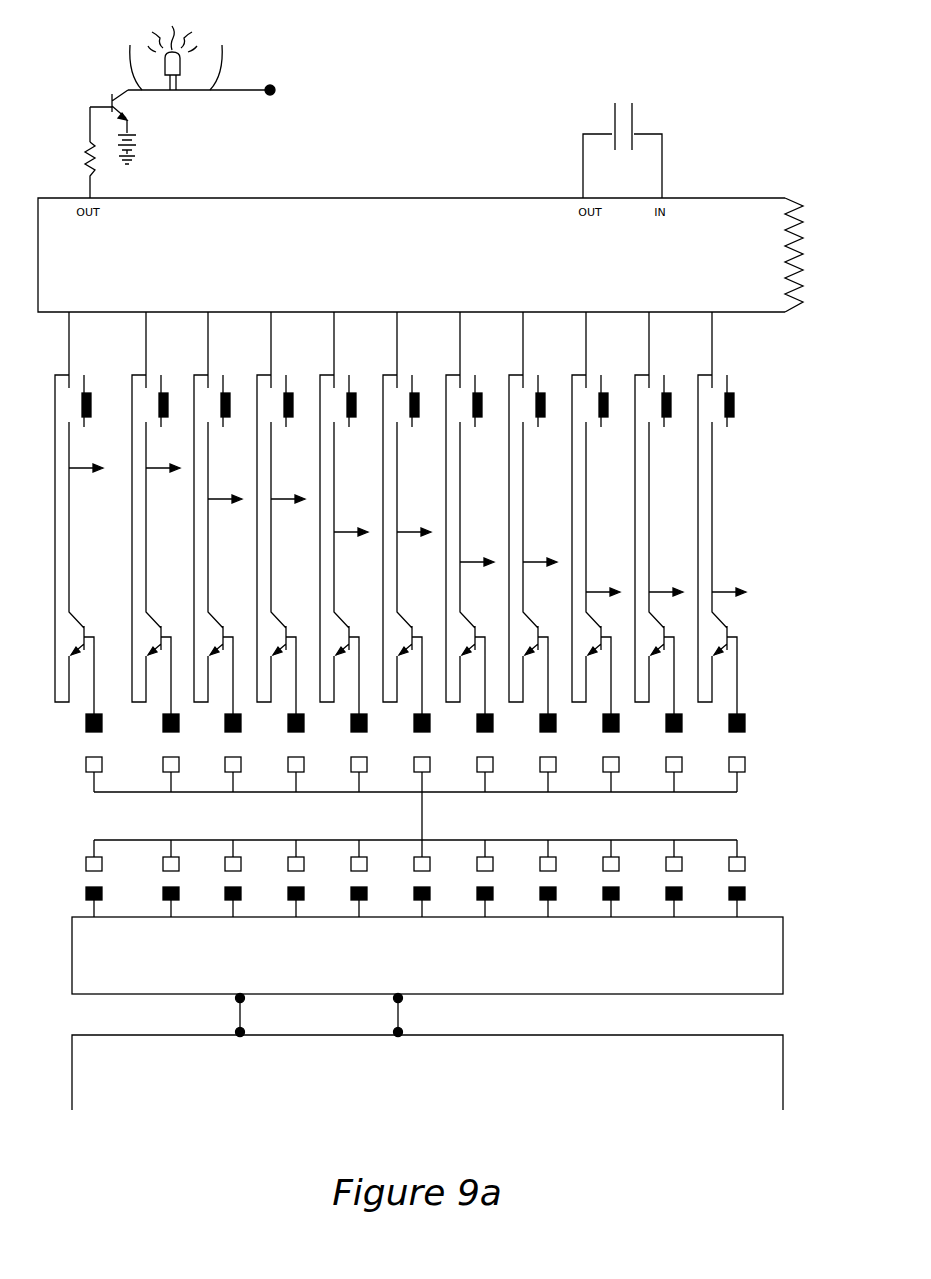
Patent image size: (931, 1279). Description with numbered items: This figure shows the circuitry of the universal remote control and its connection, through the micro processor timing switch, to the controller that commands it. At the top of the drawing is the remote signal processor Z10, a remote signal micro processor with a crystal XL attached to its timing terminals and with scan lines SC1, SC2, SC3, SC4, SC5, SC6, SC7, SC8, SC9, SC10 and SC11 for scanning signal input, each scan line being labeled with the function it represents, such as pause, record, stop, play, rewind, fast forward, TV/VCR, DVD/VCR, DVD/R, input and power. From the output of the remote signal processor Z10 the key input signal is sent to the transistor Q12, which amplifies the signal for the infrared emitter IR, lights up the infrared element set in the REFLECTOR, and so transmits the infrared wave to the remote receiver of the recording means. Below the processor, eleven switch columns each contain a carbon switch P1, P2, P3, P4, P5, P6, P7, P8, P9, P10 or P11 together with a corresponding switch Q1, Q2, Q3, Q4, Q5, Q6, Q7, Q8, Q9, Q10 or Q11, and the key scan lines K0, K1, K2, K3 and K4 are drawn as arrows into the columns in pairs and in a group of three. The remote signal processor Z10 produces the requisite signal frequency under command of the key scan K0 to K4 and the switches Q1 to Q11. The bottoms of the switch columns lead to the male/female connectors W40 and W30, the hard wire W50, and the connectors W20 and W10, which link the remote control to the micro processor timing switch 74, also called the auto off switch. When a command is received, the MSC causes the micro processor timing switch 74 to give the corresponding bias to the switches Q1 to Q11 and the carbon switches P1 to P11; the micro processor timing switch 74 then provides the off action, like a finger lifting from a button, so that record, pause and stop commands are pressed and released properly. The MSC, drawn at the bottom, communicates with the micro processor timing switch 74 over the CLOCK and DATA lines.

The remote signal processor Z10 is at (420, 255).
The crystal XL is at (622, 140).
The IR emitter IR is at (190, 63).
The reflector REFLECTOR is at (222, 72).
The amplifying transistor Q12 is at (98, 136).
The scan line SC1 is at (71, 331).
The scan line SC2 is at (140, 331).
The scan line SC3 is at (208, 331).
The scan line SC4 is at (271, 331).
The scan line SC5 is at (336, 331).
The scan line SC6 is at (397, 331).
The scan line SC7 is at (455, 331).
The scan line SC8 is at (523, 331).
The scan line SC9 is at (590, 331).
The scan line SC10 is at (655, 331).
The scan line SC11 is at (734, 331).
The carbon switch P1 is at (97, 401).
The carbon switch P2 is at (174, 401).
The carbon switch P3 is at (236, 401).
The carbon switch P4 is at (299, 401).
The carbon switch P5 is at (362, 401).
The carbon switch P6 is at (425, 401).
The carbon switch P7 is at (488, 401).
The carbon switch P8 is at (551, 401).
The carbon switch P9 is at (614, 401).
The carbon switch P10 is at (681, 401).
The carbon switch P11 is at (744, 401).
The key scan line K0 is at (124, 458).
The key scan line K1 is at (256, 489).
The key scan line K2 is at (382, 522).
The key scan line K3 is at (508, 552).
The key scan line K4 is at (666, 582).
The switch Q1 is at (81, 568).
The switch Q2 is at (158, 568).
The switch Q3 is at (220, 568).
The switch Q4 is at (283, 568).
The switch Q5 is at (346, 568).
The switch Q6 is at (409, 568).
The switch Q7 is at (472, 568).
The switch Q8 is at (535, 568).
The switch Q9 is at (598, 568).
The switch Q10 is at (664, 568).
The switch Q11 is at (727, 568).
The male/female wire connector W40 is at (750, 723).
The male/female wire connector W30 is at (752, 766).
The hard wire W50 is at (430, 830).
The male/female wire connector W20 is at (750, 862).
The male/female wire connector W10 is at (755, 891).
The auto off switch 74 is at (427, 955).
The clock line CLOCK is at (270, 1015).
The data line DATA is at (420, 1015).
The element MSC is at (427, 1072).